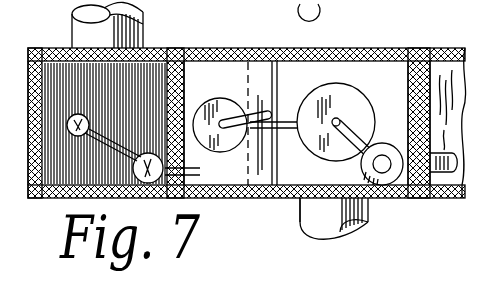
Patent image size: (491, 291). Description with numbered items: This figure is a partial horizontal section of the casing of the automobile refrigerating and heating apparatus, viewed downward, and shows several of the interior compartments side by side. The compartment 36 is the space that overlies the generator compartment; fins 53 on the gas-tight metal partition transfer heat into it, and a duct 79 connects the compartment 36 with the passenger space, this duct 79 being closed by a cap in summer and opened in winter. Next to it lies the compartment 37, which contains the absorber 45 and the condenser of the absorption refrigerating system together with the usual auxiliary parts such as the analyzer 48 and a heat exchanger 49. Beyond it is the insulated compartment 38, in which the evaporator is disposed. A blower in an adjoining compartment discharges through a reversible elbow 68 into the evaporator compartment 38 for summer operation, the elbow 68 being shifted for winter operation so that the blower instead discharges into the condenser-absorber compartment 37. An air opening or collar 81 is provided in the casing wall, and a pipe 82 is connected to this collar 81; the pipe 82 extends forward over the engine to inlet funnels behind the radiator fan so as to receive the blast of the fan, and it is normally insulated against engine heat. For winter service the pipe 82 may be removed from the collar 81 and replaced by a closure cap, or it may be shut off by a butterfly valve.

The compartment 36 is at (28, 198).
The compartment 37 is at (307, 75).
The compartment 38 is at (437, 72).
The absorber 45 is at (327, 95).
The analyzer 48 is at (165, 200).
The heat exchanger 49 is at (388, 145).
The fins 53 is at (73, 184).
The elbow 68 is at (28, 130).
The third duct 79 is at (141, 14).
The air opening or collar 81 is at (300, 203).
The pipe 82 is at (368, 222).